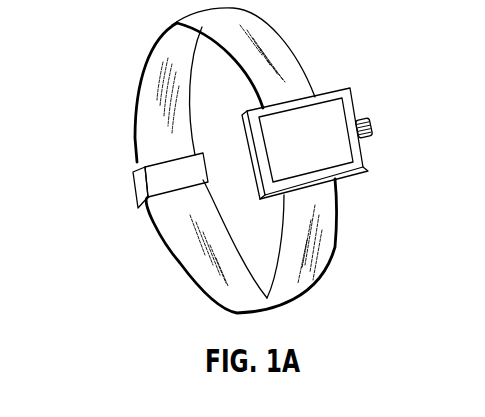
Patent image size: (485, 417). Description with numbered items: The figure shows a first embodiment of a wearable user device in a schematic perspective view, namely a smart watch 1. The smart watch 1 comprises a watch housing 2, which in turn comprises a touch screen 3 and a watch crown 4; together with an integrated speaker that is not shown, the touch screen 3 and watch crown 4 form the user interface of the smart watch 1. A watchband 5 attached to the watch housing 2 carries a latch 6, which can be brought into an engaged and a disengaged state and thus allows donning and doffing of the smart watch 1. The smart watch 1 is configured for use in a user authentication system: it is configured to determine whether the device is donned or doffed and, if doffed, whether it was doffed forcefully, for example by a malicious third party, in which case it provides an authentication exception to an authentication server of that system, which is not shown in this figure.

The smart watch 1 is at (91, 31).
The watch housing 2 is at (320, 97).
The touch screen 3 is at (316, 154).
The watch crown 4 is at (372, 127).
The watchband 5 is at (328, 250).
The latch 6 is at (133, 185).